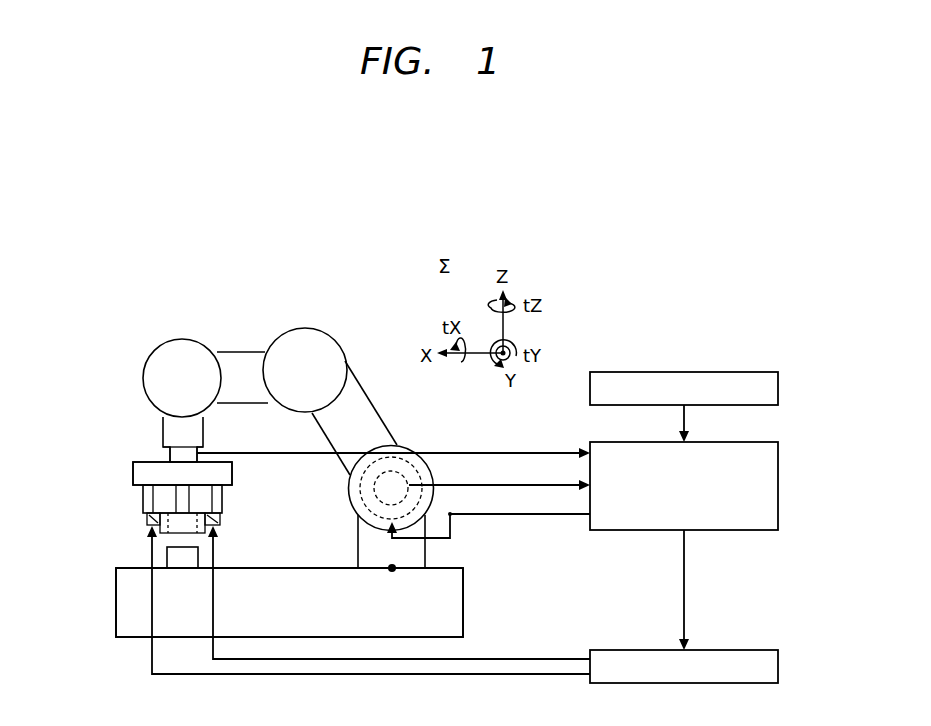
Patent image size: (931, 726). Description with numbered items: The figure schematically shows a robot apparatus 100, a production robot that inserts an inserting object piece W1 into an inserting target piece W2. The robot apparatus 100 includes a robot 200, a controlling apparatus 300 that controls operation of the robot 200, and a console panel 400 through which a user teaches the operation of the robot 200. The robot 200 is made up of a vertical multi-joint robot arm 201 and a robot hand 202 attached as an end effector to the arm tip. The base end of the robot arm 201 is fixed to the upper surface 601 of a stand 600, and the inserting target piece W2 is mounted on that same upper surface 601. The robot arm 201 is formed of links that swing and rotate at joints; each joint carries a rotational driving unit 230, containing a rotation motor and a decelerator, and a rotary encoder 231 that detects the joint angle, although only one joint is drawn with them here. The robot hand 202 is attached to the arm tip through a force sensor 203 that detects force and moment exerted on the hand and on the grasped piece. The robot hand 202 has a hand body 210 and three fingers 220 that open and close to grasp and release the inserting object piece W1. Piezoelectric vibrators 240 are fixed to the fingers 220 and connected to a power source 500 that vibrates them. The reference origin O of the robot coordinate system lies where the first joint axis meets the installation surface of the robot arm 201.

The robot apparatus 100 is at (405, 204).
The robot 200 is at (259, 292).
The robot arm 201 is at (307, 339).
The robot hand 202 is at (129, 454).
The force sensor 203 is at (172, 455).
The hand body 210 is at (135, 477).
The fingers 220 is at (145, 499).
The rotational driving unit 230 is at (433, 503).
The rotary encoder 231 is at (424, 467).
The vibrators 240 is at (148, 521).
The controlling apparatus 300 is at (779, 485).
The console panel 400 is at (779, 388).
The power source 500 is at (779, 666).
The stand 600 is at (455, 608).
The upper surface 601 is at (448, 560).
The inserting object piece W1 is at (160, 538).
The inserting target piece W2 is at (165, 558).
The reference origin O is at (392, 575).